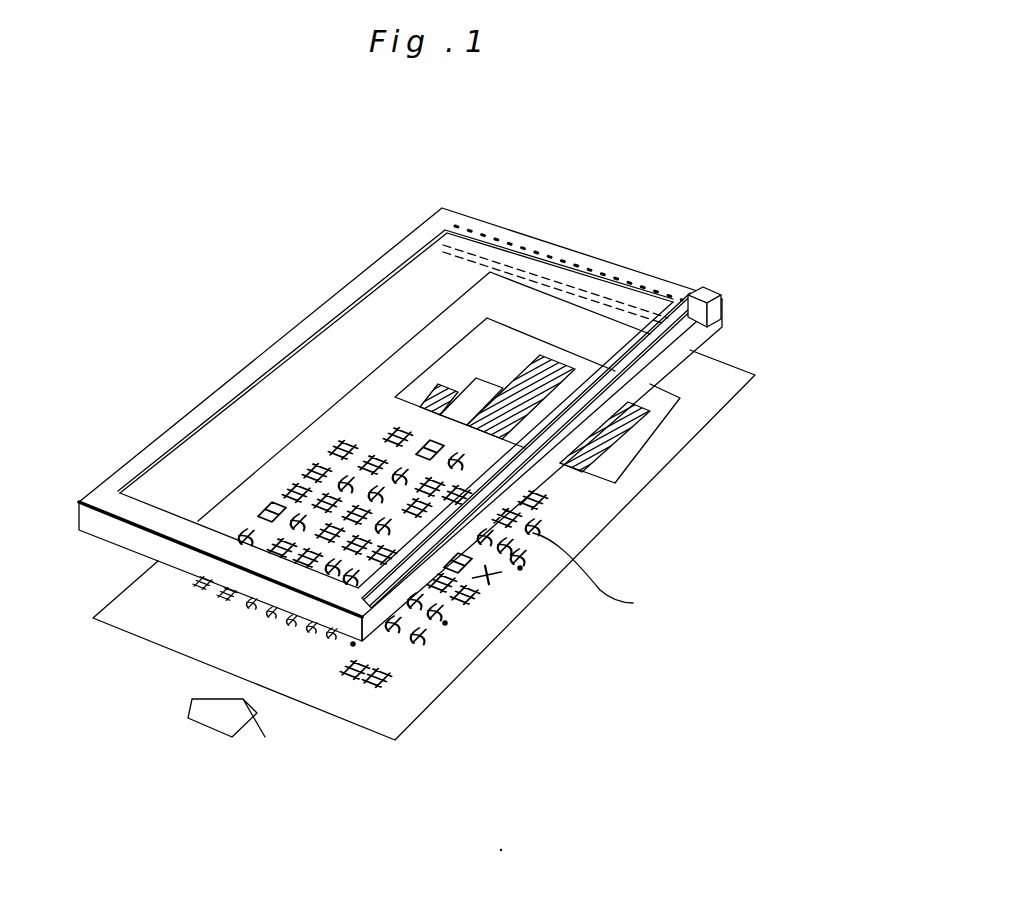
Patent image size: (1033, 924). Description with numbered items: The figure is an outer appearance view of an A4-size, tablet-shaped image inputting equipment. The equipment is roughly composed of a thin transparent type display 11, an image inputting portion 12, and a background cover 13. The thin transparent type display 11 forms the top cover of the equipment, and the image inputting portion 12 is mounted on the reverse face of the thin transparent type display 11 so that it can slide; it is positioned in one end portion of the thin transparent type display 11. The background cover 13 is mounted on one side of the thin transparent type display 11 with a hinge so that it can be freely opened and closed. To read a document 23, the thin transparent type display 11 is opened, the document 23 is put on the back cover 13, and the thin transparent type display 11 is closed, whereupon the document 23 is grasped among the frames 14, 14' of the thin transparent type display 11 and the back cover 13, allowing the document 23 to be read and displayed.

The thin transparent type display 11 is at (273, 388).
The image inputting portion 12 is at (423, 243).
The background cover 13 is at (107, 541).
The frame 14 is at (541, 447).
The frame 14' is at (395, 361).
The document 23 is at (425, 693).